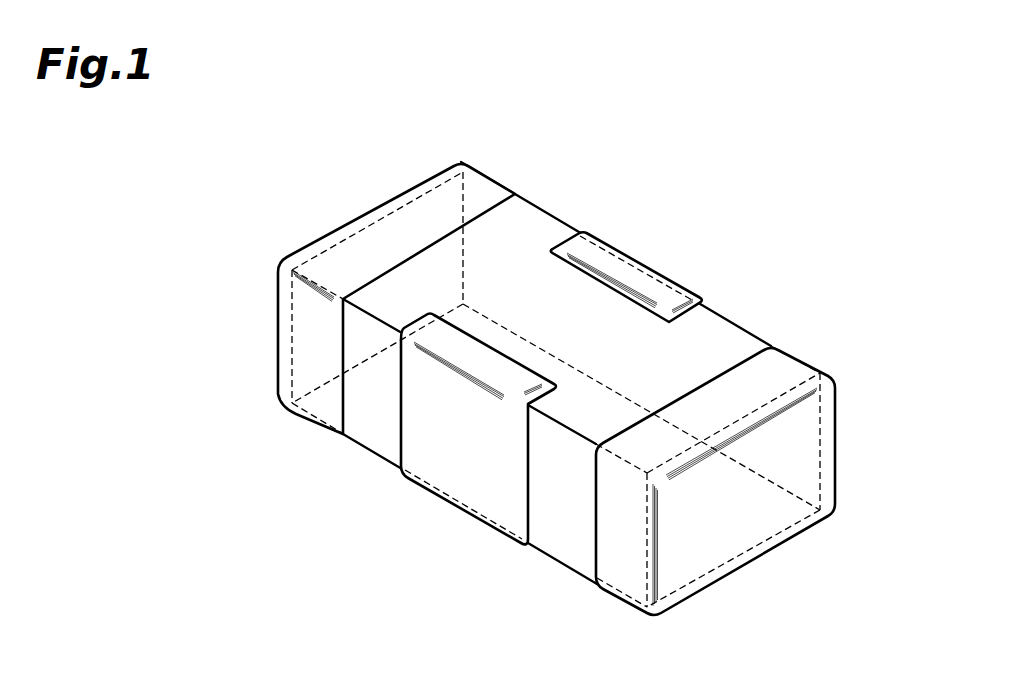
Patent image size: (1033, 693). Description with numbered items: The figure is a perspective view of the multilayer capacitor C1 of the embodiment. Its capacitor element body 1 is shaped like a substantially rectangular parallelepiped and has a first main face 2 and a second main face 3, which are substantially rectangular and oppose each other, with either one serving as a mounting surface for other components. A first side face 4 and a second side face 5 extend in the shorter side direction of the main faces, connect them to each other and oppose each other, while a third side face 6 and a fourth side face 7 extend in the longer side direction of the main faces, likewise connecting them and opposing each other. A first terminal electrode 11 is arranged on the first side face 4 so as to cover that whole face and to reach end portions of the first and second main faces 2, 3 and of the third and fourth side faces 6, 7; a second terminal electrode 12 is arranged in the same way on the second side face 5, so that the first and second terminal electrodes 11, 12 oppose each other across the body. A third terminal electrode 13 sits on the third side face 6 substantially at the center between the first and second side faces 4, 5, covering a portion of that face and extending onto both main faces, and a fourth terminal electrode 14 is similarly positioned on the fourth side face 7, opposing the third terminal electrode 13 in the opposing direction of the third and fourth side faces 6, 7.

The capacitor element body 1 is at (367, 453).
The first main face 2 is at (507, 283).
The second main face 3 is at (587, 545).
The first side face 4 is at (328, 312).
The second side face 5 is at (738, 507).
The third side face 6 is at (368, 395).
The fourth side face 7 is at (728, 353).
The first terminal electrode 11 is at (360, 214).
The second terminal electrode 12 is at (835, 423).
The third terminal electrode 13 is at (465, 480).
The fourth terminal electrode 14 is at (622, 270).
The multilayer capacitor C1 is at (768, 232).